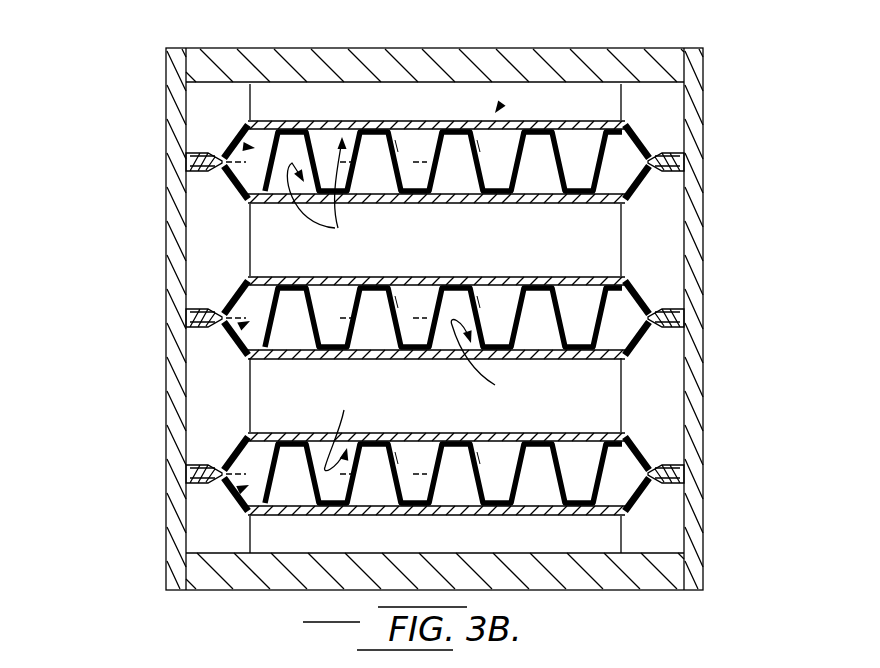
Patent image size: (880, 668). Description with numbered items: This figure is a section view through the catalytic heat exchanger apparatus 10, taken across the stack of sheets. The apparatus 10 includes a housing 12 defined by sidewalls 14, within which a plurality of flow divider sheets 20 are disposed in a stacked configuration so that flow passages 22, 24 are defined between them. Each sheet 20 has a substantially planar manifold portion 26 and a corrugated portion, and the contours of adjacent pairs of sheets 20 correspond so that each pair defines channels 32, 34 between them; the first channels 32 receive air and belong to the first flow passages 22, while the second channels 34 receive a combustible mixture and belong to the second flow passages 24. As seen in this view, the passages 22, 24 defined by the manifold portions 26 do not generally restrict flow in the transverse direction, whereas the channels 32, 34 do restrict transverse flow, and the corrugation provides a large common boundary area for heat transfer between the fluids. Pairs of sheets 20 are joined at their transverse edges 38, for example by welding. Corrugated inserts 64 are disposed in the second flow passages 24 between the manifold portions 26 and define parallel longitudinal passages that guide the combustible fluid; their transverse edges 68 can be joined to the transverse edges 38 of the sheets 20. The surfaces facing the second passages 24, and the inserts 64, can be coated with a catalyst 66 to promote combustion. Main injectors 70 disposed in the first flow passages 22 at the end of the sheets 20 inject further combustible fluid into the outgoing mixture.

The apparatus 10 is at (140, 48).
The housing 12 is at (298, 50).
The sidewalls 14 is at (645, 52).
The flow divider sheets 20 is at (628, 125).
The first flow passages 22 is at (248, 97).
The second flow passages 24 is at (253, 148).
The manifold portion 26 is at (497, 110).
The first channels 32 is at (338, 110).
The second channels 34 is at (540, 155).
The transverse edges 38 is at (686, 175).
The corrugated inserts 64 is at (397, 147).
The catalyst 66 is at (408, 304).
The transverse edges of the corrugated inserts 68 is at (190, 160).
The main injectors 70 is at (250, 225).